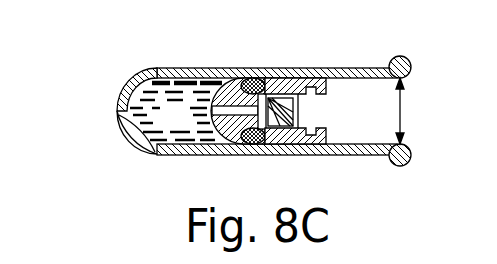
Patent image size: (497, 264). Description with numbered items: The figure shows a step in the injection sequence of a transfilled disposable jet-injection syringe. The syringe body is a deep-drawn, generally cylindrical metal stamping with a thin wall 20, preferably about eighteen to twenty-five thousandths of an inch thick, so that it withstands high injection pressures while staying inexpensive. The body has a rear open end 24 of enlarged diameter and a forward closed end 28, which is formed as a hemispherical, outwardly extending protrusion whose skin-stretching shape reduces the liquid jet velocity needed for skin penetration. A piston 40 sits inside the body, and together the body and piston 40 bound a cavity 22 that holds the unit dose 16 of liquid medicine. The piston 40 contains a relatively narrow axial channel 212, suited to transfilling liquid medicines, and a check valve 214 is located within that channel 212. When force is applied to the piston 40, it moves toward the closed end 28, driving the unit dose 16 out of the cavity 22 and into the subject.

The thin wall 20 is at (157, 156).
The forward closed end 28 is at (117, 105).
The cavity 22 is at (172, 116).
The unit dose 16 is at (190, 97).
The axial channel 212 is at (237, 112).
The piston 40 is at (246, 82).
The check valve 214 is at (298, 96).
The rear open end 24 is at (402, 112).